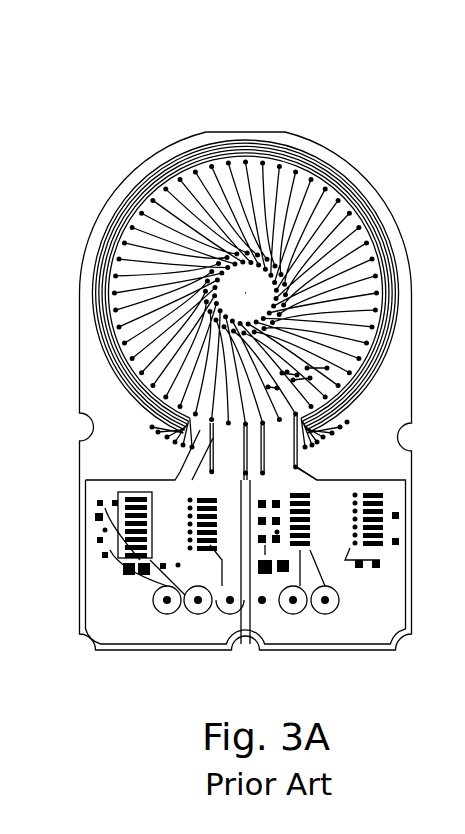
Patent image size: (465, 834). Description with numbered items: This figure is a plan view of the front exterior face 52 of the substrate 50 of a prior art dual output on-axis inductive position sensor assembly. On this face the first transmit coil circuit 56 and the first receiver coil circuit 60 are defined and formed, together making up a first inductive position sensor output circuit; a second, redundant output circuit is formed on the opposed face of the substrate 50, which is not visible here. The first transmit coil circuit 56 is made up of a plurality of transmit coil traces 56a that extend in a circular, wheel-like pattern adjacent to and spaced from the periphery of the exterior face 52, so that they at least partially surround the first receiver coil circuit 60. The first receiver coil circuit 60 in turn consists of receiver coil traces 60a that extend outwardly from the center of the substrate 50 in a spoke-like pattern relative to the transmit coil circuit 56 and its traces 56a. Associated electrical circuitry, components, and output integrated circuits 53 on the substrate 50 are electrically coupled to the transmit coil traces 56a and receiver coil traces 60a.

The substrate 50 is at (152, 650).
The exterior face 52 is at (120, 449).
The output integrated circuits 53 is at (128, 535).
The first transmit coil circuit 56 is at (313, 145).
The transmit coil traces 56a is at (198, 148).
The first receiver coil circuit 60 is at (327, 215).
The receiver coil traces 60a is at (280, 188).